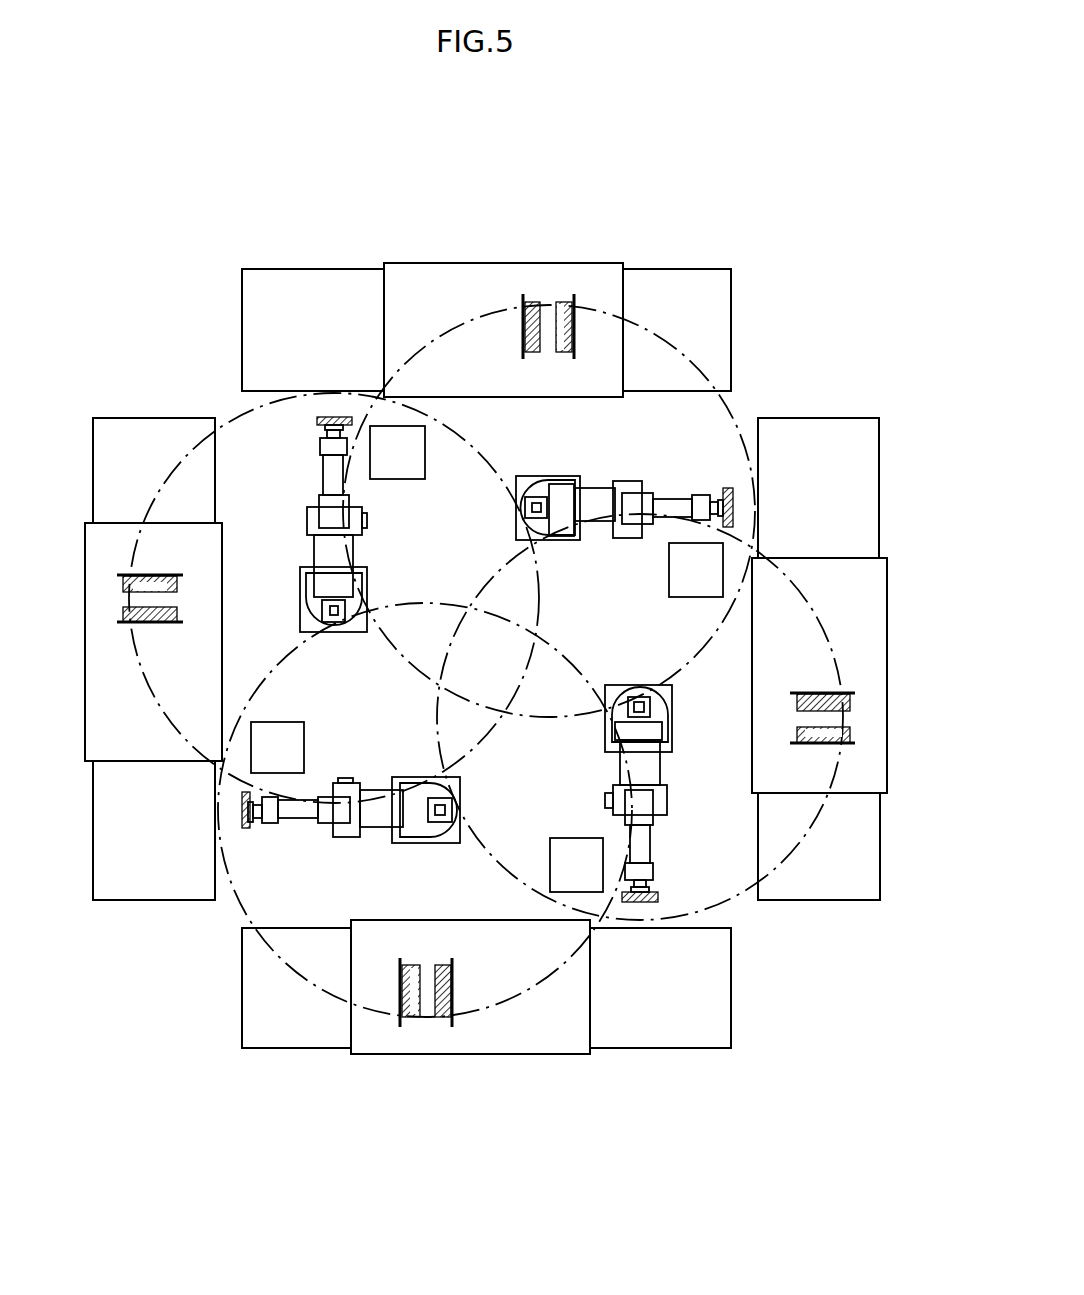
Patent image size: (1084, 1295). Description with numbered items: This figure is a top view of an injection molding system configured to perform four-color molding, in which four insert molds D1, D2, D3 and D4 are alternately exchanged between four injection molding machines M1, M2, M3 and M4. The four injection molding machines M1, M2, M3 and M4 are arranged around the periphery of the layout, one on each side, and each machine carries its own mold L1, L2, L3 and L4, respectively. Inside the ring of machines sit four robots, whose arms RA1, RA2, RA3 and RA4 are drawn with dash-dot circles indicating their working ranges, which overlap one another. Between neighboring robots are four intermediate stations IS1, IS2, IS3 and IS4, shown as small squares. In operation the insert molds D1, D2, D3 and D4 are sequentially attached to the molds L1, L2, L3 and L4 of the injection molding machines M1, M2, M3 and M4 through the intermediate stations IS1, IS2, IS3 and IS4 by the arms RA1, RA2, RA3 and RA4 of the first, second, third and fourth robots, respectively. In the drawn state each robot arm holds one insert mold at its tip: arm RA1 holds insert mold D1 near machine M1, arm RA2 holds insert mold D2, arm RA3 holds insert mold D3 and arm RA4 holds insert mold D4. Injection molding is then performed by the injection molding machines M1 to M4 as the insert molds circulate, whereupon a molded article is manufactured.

The injection molding machine M1 is at (795, 905).
The injection molding machine M2 is at (392, 1058).
The injection molding machine M3 is at (177, 415).
The injection molding machine M4 is at (520, 263).
The mold L1 is at (860, 743).
The mold L2 is at (458, 957).
The mold L3 is at (181, 571).
The mold L4 is at (575, 296).
The arm of first robot RA1 is at (623, 683).
The arm of second robot RA2 is at (415, 843).
The arm of third robot RA3 is at (307, 637).
The arm of fourth robot RA4 is at (532, 472).
The intermediate station IS1 is at (572, 897).
The intermediate station IS2 is at (296, 777).
The intermediate station IS3 is at (400, 425).
The intermediate station IS4 is at (688, 540).
The insert mold D1 is at (637, 907).
The insert mold D2 is at (243, 830).
The insert mold D3 is at (328, 413).
The insert mold D4 is at (737, 487).